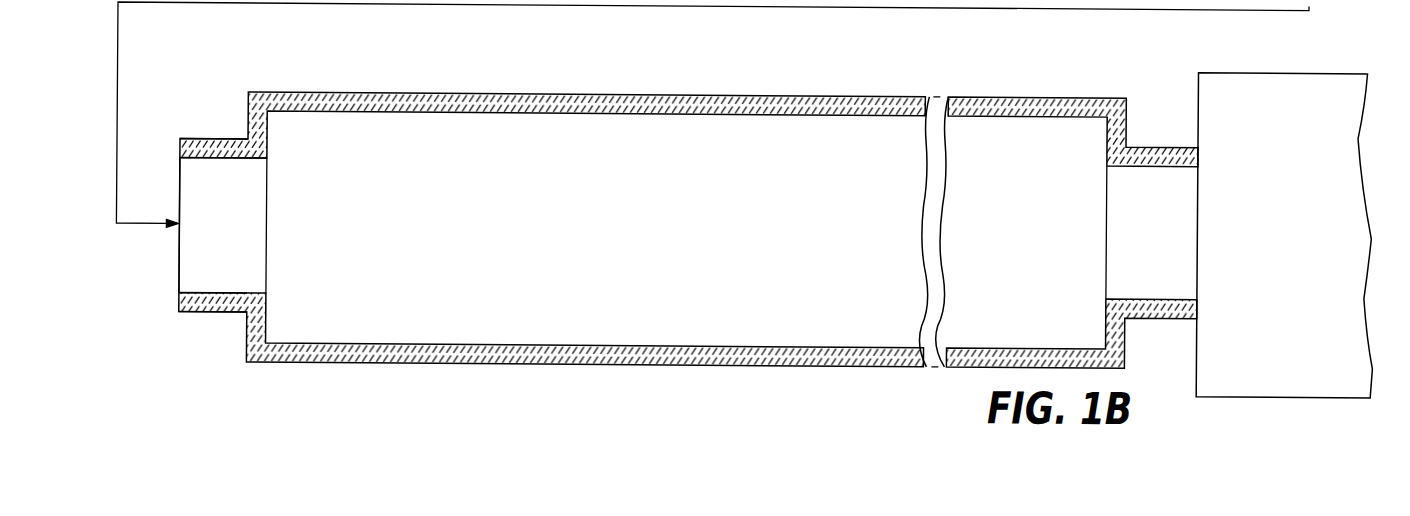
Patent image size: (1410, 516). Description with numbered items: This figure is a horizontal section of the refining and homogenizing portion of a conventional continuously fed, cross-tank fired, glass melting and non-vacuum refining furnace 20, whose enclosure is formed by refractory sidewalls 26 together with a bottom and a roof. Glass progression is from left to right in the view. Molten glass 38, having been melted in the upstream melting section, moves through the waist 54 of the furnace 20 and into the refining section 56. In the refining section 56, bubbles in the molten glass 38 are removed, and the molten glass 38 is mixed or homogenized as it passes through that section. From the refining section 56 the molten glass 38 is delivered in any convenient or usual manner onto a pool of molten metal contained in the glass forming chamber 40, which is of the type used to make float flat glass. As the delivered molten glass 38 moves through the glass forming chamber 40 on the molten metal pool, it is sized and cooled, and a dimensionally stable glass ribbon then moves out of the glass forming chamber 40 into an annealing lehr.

The glass melting furnace 20 is at (688, 215).
The sidewalls 26 is at (652, 91).
The molten glass 38 is at (786, 320).
The glass forming chamber 40 is at (1262, 389).
The waist 54 is at (208, 137).
The refining section 56 is at (688, 218).